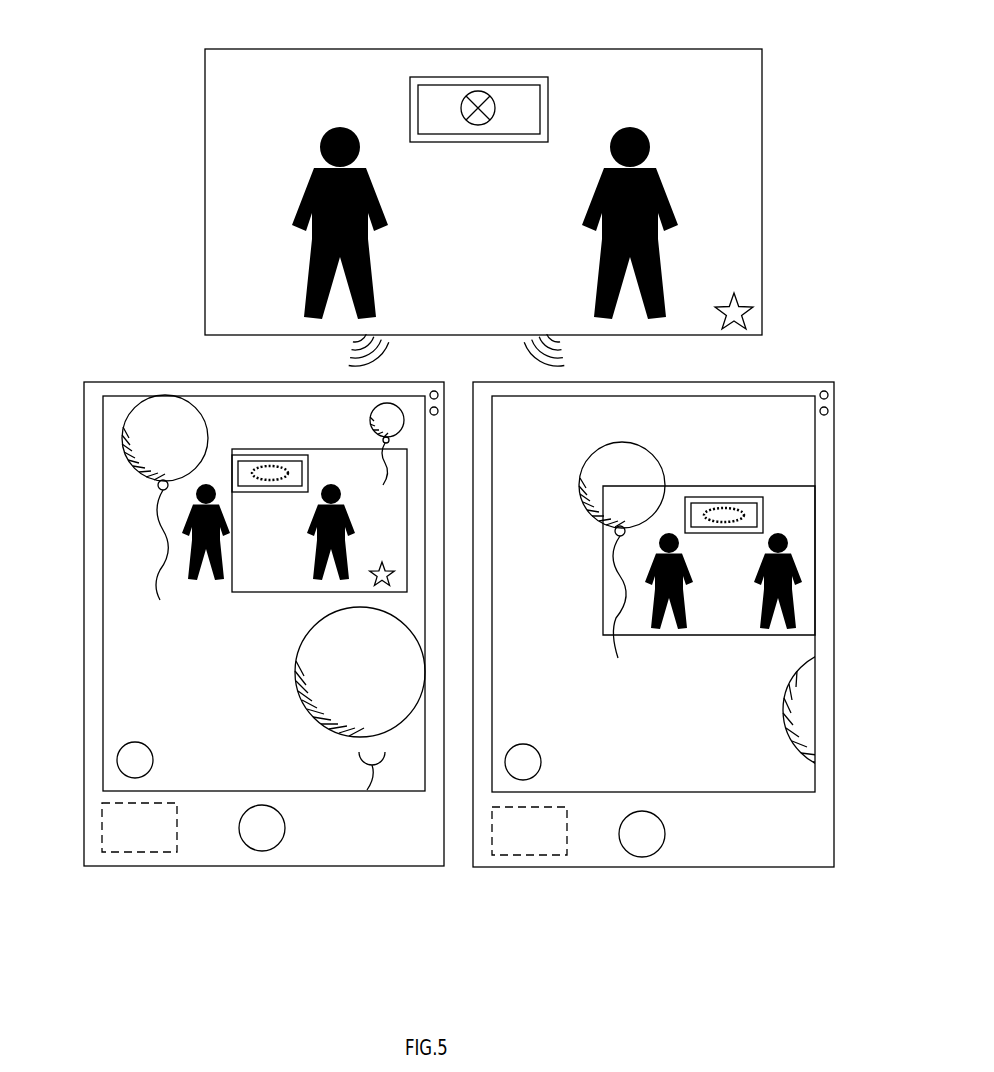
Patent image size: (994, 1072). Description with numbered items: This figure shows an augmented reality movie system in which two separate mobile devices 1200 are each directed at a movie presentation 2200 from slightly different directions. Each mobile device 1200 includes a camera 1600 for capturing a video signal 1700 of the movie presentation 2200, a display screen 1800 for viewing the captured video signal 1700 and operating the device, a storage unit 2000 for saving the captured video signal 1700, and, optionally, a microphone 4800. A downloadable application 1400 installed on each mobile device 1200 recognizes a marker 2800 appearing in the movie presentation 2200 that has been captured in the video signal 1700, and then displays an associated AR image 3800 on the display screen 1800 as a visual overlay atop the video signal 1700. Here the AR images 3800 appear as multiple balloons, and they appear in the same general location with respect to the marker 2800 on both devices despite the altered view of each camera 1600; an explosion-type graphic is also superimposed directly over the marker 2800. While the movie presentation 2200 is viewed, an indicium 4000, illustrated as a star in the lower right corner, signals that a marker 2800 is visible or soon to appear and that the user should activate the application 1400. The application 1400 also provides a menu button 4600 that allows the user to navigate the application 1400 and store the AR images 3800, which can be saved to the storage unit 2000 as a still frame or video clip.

The mobile device 1200 is at (240, 855).
The downloadable application 1400 is at (337, 783).
The camera 1600 is at (434, 391).
The video signal 1700 is at (362, 360).
The display screen 1800 is at (267, 407).
The storage unit 2000 is at (150, 838).
The movie presentation 2200 is at (743, 160).
The marker 2800 is at (483, 97).
The AR image 3800 is at (268, 462).
The indicium 4000 is at (738, 298).
The menu button 4600 is at (122, 766).
The microphone 4800 is at (439, 411).